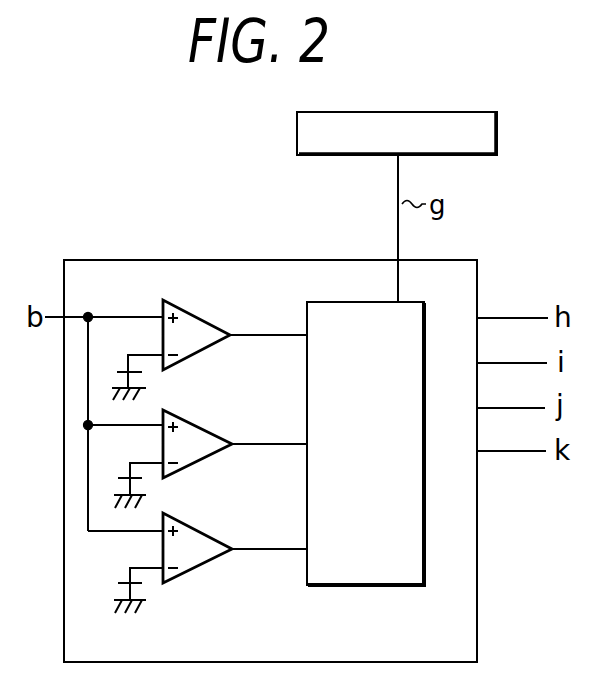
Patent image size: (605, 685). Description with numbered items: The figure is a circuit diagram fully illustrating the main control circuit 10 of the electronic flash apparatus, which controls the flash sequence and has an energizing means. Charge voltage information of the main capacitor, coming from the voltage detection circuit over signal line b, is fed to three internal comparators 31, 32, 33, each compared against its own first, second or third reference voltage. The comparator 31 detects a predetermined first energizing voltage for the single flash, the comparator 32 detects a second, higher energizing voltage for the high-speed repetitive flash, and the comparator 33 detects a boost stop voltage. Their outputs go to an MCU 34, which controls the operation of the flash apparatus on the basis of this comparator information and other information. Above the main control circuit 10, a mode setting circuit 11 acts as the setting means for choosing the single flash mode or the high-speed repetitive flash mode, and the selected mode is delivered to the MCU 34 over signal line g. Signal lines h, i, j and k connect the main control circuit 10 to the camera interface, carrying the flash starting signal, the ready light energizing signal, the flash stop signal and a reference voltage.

The main control circuit 10 is at (314, 252).
The mode setting circuit 11 is at (452, 111).
The comparator 31 is at (204, 314).
The comparator 32 is at (198, 422).
The comparator 33 is at (198, 529).
The MCU 34 is at (358, 587).